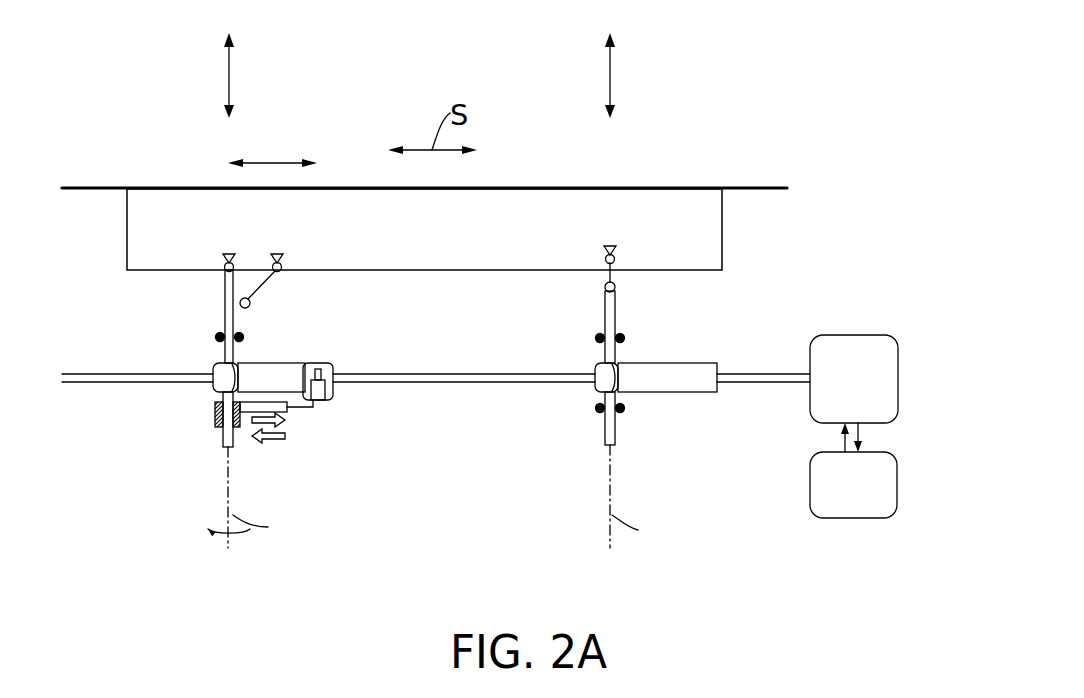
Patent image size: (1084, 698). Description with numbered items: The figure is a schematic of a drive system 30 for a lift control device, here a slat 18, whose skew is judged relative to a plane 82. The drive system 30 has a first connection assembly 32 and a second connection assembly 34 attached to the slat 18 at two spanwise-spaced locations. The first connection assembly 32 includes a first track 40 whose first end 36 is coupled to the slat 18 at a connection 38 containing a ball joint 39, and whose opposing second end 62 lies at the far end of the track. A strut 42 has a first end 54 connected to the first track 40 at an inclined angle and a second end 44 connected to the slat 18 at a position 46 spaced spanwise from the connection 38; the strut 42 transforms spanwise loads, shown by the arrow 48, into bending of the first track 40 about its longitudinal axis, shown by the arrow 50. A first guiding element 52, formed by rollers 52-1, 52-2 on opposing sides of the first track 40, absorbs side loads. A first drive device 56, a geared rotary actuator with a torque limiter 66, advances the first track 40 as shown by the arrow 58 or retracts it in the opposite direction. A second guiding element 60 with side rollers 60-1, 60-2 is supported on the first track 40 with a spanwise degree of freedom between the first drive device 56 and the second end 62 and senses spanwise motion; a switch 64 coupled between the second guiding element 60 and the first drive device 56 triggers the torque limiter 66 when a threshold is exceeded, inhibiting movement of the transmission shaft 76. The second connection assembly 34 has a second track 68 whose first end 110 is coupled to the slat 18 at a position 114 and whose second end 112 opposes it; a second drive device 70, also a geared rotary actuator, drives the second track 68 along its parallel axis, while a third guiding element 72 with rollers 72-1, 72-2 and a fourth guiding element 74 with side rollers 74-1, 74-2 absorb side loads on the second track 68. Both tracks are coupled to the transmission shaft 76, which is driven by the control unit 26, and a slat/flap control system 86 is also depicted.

The slat 18 is at (636, 205).
The control unit 26 is at (897, 352).
The drive system 30 is at (805, 278).
The first connection assembly 32 is at (243, 361).
The second connection assembly 34 is at (652, 383).
The first end of the first track 36 is at (226, 266).
The connection 38 is at (229, 254).
The ball joint 39 is at (222, 250).
The first track 40 is at (224, 296).
The strut 42 is at (270, 290).
The second end of the strut 44 is at (281, 274).
The position 46 is at (278, 254).
The arrow 48 is at (275, 162).
The arrow 50 is at (238, 533).
The first guiding element 52 is at (196, 330).
The roller 52-1 is at (218, 332).
The roller 52-2 is at (241, 340).
The first end of the strut 54 is at (248, 307).
The first drive device 56 is at (337, 393).
The arrow 58 is at (425, 81).
The second guiding element 60 is at (203, 442).
The side roller 60-1 is at (215, 404).
The side roller 60-2 is at (241, 413).
The second end of the first track 62 is at (233, 449).
The switch 64 is at (318, 405).
The torque limiter 66 is at (318, 390).
The second track 68 is at (594, 307).
The second drive device 70 is at (718, 376).
The third guiding element 72 is at (613, 332).
The roller 72-1 is at (594, 337).
The roller 72-2 is at (624, 337).
The fourth guiding element 74 is at (611, 434).
The side roller 74-1 is at (594, 408).
The side roller 74-2 is at (626, 408).
The transmission shaft 76 is at (152, 367).
The plane 82 is at (93, 187).
The slat/flap control system 86 is at (898, 471).
The first end of the second track 110 is at (617, 287).
The second end of the second track 112 is at (612, 448).
The position 114 is at (611, 246).